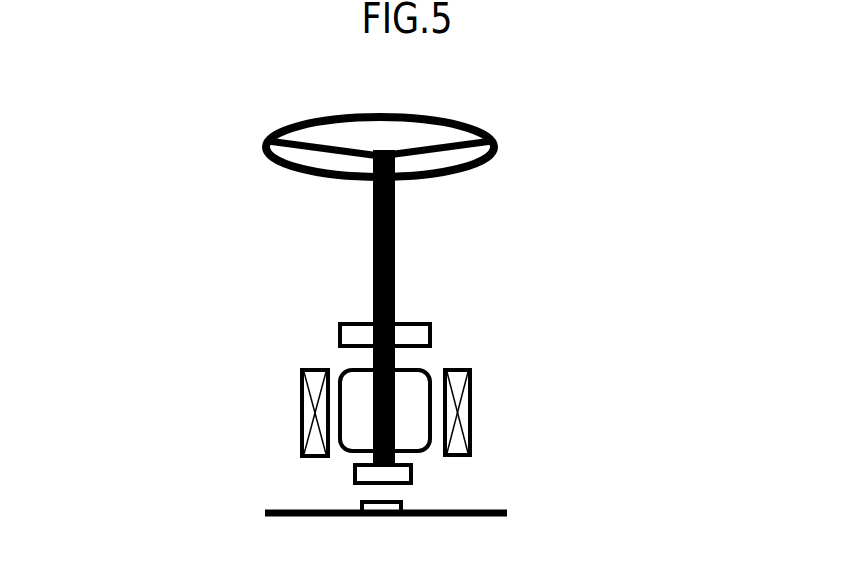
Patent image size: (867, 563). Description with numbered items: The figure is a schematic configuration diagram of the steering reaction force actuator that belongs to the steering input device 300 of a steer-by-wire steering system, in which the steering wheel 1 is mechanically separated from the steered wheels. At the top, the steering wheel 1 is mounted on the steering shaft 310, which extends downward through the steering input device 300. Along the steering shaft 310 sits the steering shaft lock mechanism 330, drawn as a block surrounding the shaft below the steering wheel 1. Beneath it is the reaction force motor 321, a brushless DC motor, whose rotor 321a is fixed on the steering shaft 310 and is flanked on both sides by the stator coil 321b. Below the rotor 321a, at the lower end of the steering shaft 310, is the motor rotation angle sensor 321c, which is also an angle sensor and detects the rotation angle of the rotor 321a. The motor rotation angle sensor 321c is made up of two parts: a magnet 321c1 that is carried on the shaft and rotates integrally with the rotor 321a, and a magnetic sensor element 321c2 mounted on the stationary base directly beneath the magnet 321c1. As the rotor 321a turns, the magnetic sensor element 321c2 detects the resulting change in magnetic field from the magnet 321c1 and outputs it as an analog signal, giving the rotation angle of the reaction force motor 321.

The steering wheel 1 is at (327, 113).
The steering input device 300 is at (406, 331).
The steering shaft 310 is at (395, 256).
The steering shaft lock mechanism 330 is at (340, 322).
The reaction force motor 321 is at (406, 411).
The rotor 321a is at (409, 362).
The stator coil 321b is at (472, 397).
The motor rotation angle sensor 321c is at (541, 477).
The magnet 321c1 is at (413, 473).
The magnetic sensor element 321c2 is at (403, 500).